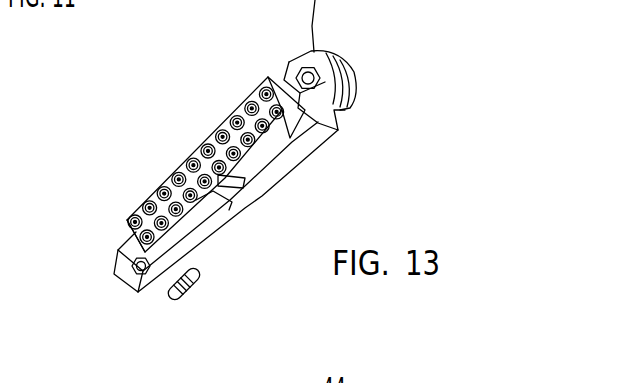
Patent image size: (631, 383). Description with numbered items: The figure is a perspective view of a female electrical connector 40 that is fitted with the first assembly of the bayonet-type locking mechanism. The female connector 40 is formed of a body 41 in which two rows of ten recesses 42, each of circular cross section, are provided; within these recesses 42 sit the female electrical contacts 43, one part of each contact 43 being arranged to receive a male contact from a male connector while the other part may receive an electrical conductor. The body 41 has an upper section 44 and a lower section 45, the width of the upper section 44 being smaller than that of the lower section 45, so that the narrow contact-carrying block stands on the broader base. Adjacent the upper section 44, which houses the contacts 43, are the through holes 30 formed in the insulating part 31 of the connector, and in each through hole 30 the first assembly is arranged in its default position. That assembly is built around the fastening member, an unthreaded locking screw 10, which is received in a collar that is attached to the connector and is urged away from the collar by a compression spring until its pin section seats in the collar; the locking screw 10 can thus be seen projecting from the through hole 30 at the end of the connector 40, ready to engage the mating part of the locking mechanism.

The locking screw 10 is at (364, 75).
The through hole 30 is at (132, 273).
The insulating part 31 is at (350, 116).
The female connector 40 is at (243, 150).
The body 41 is at (128, 238).
The recesses 42 is at (258, 80).
The female electrical contacts 43 is at (237, 108).
The upper section 44 is at (173, 140).
The lower section 45 is at (262, 197).